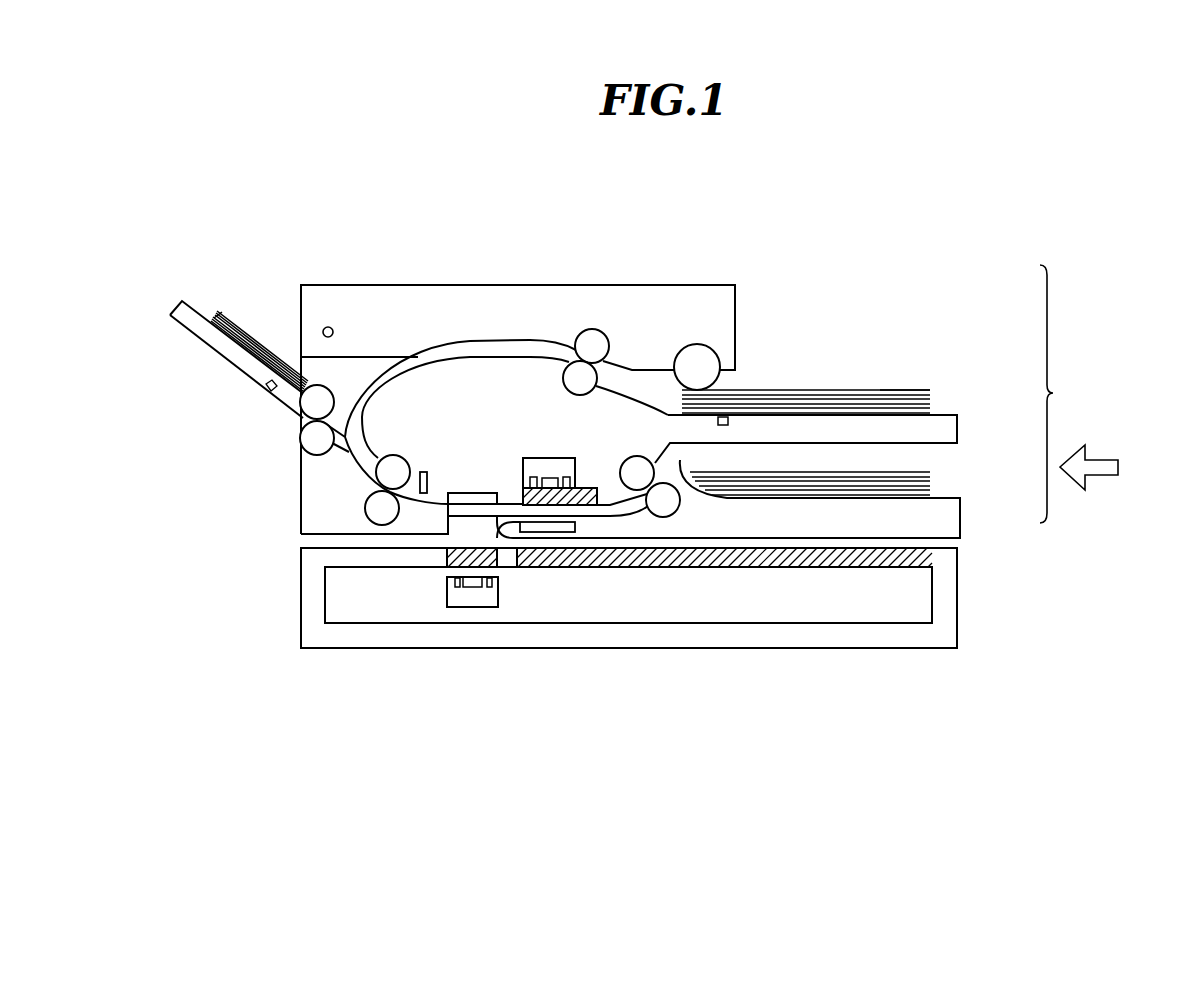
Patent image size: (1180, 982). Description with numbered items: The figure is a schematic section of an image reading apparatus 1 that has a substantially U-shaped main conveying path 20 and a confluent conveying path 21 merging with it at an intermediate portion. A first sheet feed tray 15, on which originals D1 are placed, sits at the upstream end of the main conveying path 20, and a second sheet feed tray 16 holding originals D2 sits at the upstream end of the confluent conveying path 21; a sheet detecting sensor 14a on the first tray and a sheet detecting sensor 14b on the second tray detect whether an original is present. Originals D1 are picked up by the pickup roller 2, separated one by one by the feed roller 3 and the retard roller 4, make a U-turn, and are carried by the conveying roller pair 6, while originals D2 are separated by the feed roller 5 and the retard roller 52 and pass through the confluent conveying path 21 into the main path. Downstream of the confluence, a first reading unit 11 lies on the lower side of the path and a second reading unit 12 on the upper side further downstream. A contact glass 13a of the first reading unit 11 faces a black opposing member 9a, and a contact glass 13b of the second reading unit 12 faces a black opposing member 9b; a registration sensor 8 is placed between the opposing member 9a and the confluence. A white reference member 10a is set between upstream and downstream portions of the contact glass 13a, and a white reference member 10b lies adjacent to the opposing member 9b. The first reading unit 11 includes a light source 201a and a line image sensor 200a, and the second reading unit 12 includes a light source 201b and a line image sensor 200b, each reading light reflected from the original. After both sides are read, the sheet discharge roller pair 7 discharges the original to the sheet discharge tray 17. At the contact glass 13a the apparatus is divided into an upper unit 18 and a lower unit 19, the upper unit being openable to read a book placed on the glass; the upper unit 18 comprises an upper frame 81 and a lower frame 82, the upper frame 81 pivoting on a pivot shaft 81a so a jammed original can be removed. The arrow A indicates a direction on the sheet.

The image reading apparatus 1 is at (802, 268).
The pickup roller 2 is at (697, 344).
The feed roller 3 is at (593, 329).
The retard roller 4 is at (563, 378).
The feed roller 5 is at (312, 403).
The retard roller 52 is at (313, 443).
The conveying roller pair 6 is at (388, 475).
The sheet discharge roller pair 7 is at (645, 466).
The registration sensor 8 is at (423, 472).
The opposing member 9a is at (470, 493).
The opposing member 9b is at (542, 532).
The reference member 10a is at (512, 567).
The reference member 10b is at (565, 532).
The first reading unit 11 is at (500, 597).
The second reading unit 12 is at (523, 470).
The contact glass 13a is at (453, 568).
The contact glass 13b is at (603, 560).
The sheet detecting sensor 14a is at (728, 423).
The sheet detecting sensor 14b is at (268, 376).
The first sheet feed tray 15 is at (957, 425).
The second sheet feed tray 16 is at (235, 375).
The sheet discharge tray 17 is at (960, 522).
The upper unit 18 is at (1068, 394).
The lower unit 19 is at (958, 616).
The main conveying path 20 is at (378, 510).
The confluent conveying path 21 is at (352, 440).
The upper frame 81 is at (452, 284).
The pivot shaft 81a is at (329, 326).
The lower frame 82 is at (378, 357).
The line image sensor 200a is at (470, 590).
The line image sensor 200b is at (550, 478).
The light source 201a is at (456, 590).
The light source 201b is at (533, 477).
The original D1 is at (893, 395).
The original D2 is at (218, 318).
The direction arrow A is at (1104, 467).